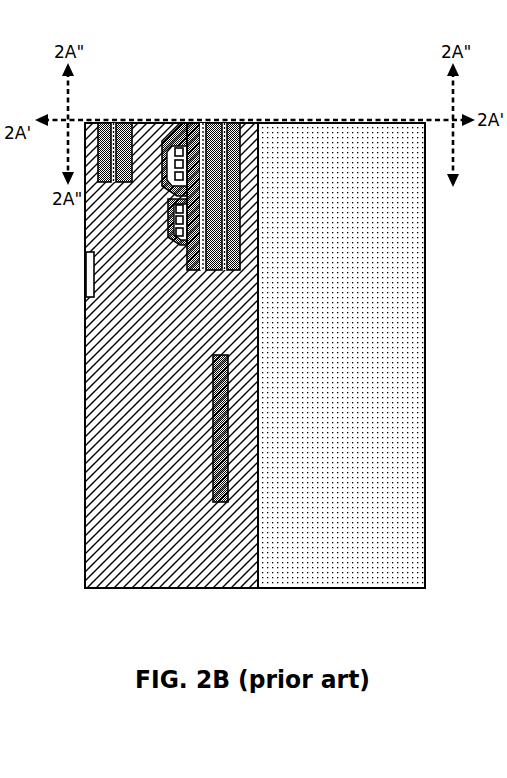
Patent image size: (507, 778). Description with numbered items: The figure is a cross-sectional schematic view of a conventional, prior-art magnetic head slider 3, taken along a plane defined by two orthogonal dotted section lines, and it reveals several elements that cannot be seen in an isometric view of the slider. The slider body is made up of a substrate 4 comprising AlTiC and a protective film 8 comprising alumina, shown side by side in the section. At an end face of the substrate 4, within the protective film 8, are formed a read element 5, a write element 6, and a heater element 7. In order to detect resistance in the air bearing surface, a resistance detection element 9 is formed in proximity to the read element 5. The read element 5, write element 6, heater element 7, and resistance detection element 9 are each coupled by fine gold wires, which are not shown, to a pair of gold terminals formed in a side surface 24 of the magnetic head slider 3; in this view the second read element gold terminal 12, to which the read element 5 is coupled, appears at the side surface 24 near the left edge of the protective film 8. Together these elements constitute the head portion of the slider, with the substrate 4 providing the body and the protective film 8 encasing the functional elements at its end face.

The magnetic head slider 3 is at (228, 48).
The substrate 4 is at (342, 582).
The read element 5 is at (242, 118).
The write element 6 is at (202, 118).
The heater element 7 is at (222, 398).
The protective film 8 is at (180, 582).
The resistance detection element 9 is at (97, 118).
The second read element gold terminal 12 is at (88, 274).
The side surface 24 is at (75, 315).